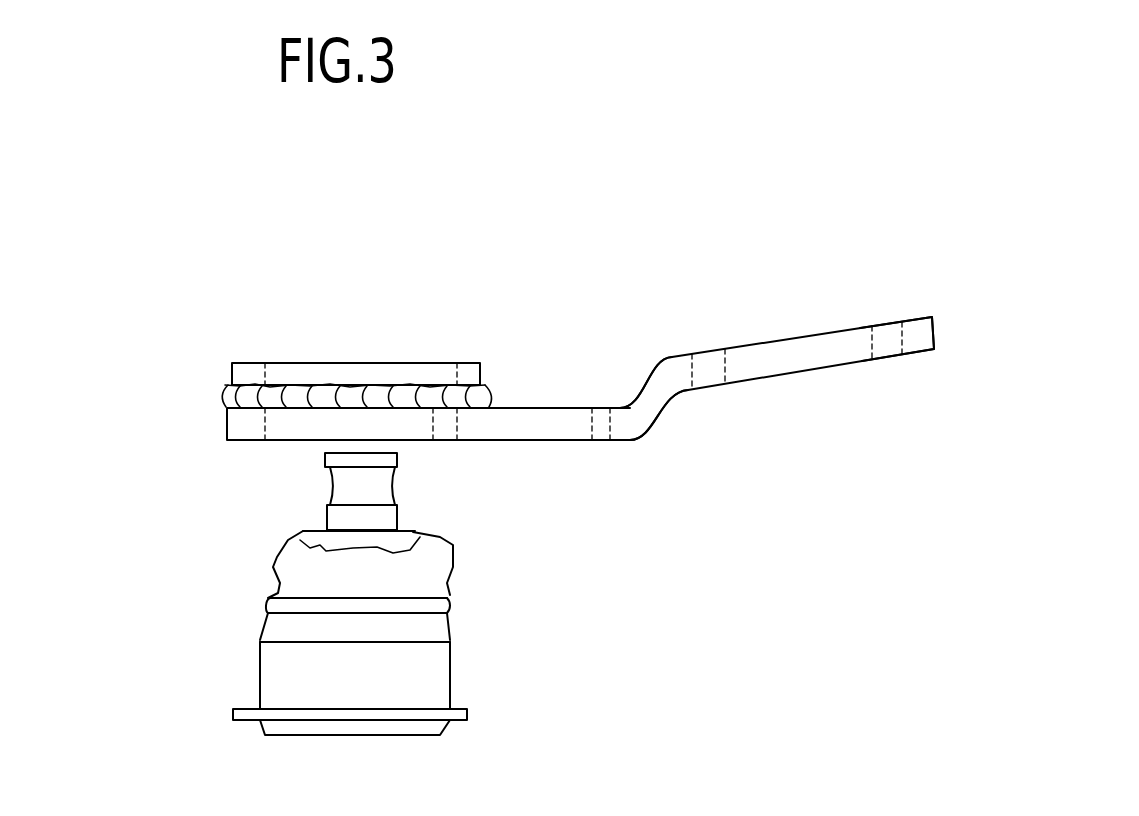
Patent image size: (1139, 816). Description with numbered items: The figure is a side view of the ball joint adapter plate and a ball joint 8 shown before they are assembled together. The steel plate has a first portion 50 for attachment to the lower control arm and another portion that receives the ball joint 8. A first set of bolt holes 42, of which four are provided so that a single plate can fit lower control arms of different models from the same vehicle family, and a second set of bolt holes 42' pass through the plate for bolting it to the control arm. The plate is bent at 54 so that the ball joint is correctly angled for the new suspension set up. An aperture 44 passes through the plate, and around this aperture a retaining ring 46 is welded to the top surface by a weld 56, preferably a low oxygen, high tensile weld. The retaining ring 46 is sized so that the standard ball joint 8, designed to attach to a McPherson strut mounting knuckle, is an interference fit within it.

The ball joint 8 is at (448, 677).
The first set of bolt holes 42 is at (667, 420).
The second set of bolt holes 42' is at (659, 497).
The aperture 44 is at (265, 513).
The retaining ring 46 is at (247, 362).
The first portion 50 is at (920, 315).
The bend 54 is at (656, 420).
The weld 56 is at (485, 386).